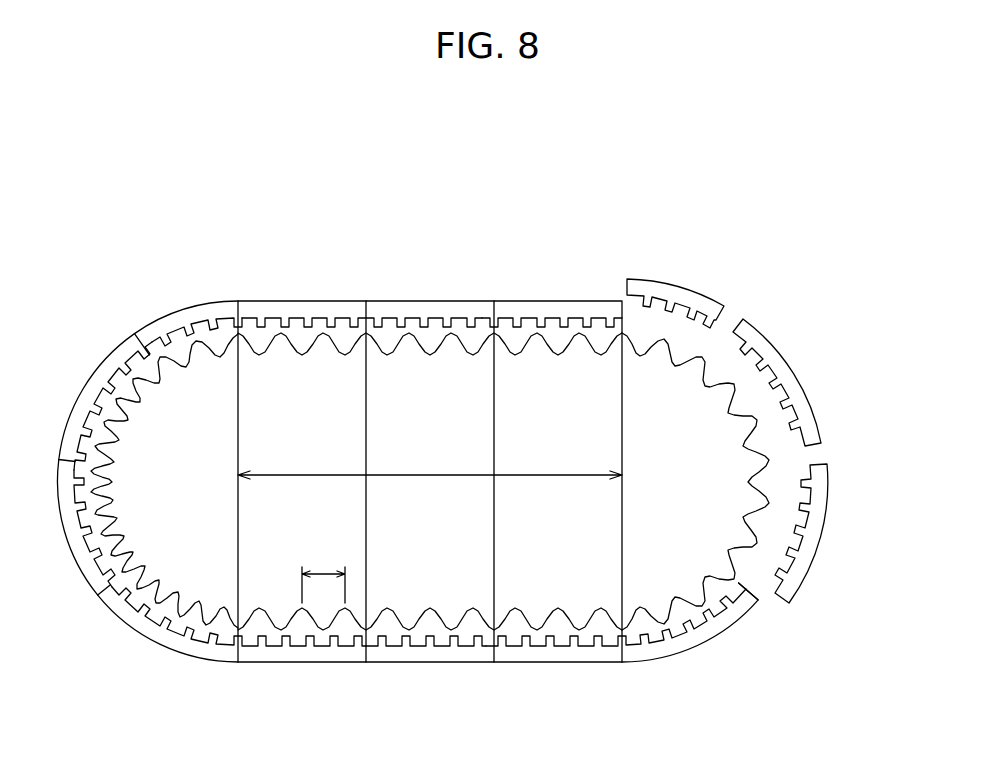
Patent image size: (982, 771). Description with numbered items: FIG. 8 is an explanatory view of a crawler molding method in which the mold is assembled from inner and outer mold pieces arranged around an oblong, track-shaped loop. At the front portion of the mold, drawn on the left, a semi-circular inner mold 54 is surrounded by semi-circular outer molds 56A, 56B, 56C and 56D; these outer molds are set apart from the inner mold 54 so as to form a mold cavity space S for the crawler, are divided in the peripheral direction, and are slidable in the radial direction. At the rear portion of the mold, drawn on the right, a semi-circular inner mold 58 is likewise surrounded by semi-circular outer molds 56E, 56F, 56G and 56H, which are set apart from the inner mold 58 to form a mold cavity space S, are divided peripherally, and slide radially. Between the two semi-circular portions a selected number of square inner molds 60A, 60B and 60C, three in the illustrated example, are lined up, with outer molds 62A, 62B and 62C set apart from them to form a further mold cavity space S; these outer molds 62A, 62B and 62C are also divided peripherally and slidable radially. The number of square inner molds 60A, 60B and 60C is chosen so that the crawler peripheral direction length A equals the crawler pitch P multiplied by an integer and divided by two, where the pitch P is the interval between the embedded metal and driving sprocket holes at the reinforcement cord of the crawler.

The semi-circular inner mold 54 is at (147, 427).
The semi-circular outer mold 56A is at (175, 324).
The semi-circular outer mold 56B is at (105, 374).
The semi-circular outer mold 56C is at (70, 528).
The semi-circular outer mold 56D is at (157, 638).
The semi-circular outer mold 56E is at (657, 282).
The semi-circular outer mold 56F is at (790, 378).
The semi-circular outer mold 56G is at (800, 568).
The semi-circular outer mold 56H is at (683, 643).
The semi-circular inner mold 58 is at (658, 382).
The square inner mold 60A is at (297, 387).
The square inner mold 60B is at (448, 365).
The square inner mold 60C is at (523, 380).
The outer mold 62A is at (267, 312).
The outer mold 62B is at (577, 305).
The outer mold 62C is at (587, 654).
The mold cavity space S is at (723, 587).
The crawler peripheral direction length A is at (428, 473).
The crawler pitch P is at (323, 569).